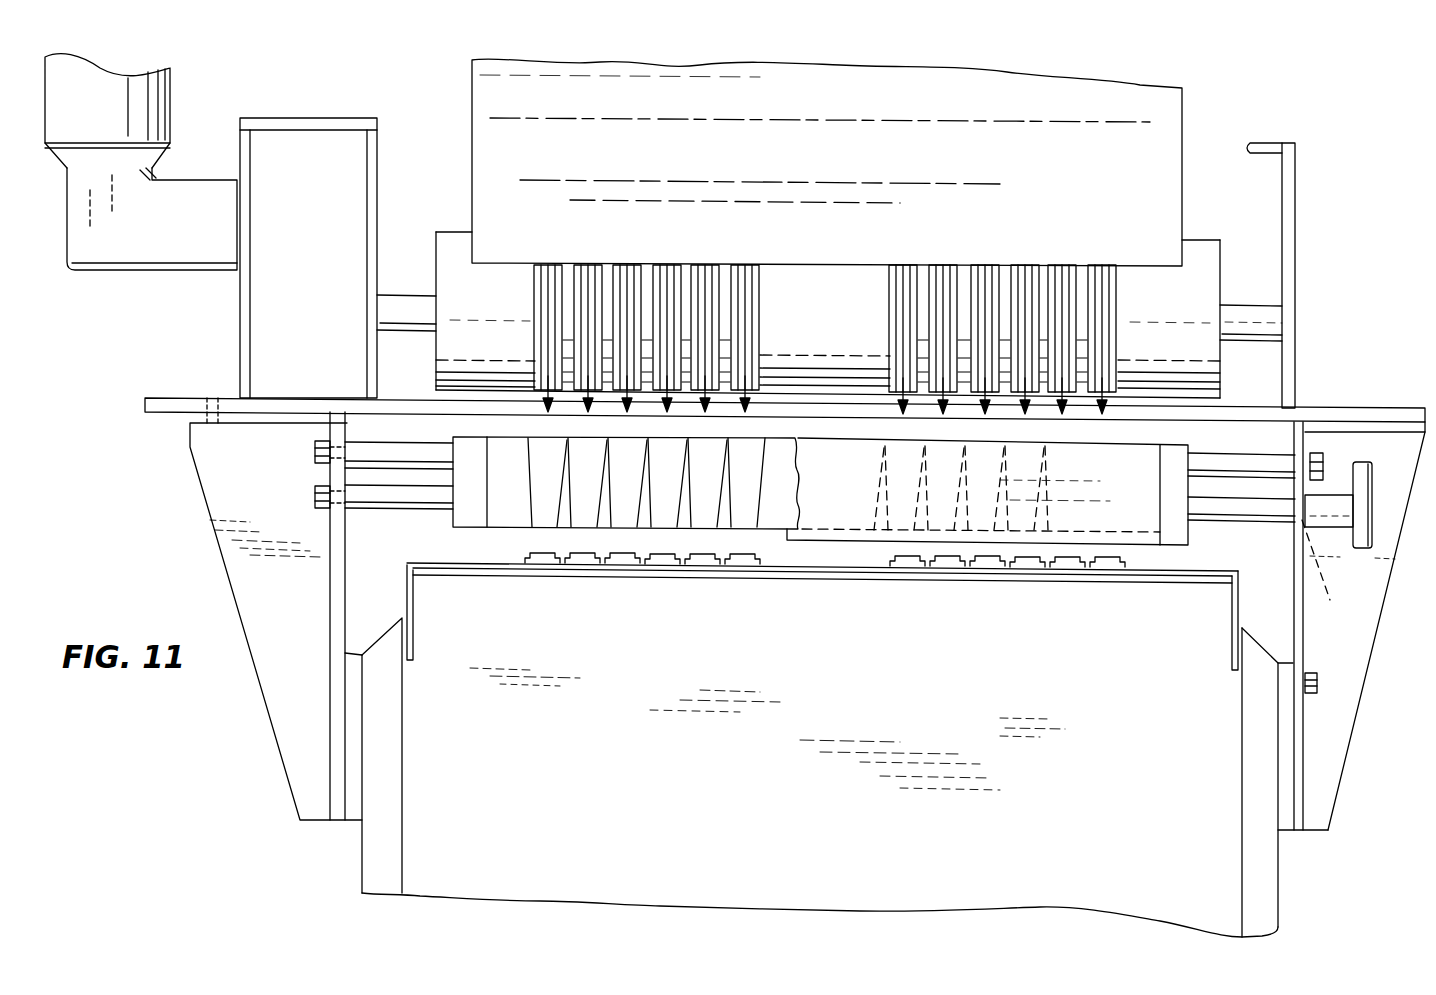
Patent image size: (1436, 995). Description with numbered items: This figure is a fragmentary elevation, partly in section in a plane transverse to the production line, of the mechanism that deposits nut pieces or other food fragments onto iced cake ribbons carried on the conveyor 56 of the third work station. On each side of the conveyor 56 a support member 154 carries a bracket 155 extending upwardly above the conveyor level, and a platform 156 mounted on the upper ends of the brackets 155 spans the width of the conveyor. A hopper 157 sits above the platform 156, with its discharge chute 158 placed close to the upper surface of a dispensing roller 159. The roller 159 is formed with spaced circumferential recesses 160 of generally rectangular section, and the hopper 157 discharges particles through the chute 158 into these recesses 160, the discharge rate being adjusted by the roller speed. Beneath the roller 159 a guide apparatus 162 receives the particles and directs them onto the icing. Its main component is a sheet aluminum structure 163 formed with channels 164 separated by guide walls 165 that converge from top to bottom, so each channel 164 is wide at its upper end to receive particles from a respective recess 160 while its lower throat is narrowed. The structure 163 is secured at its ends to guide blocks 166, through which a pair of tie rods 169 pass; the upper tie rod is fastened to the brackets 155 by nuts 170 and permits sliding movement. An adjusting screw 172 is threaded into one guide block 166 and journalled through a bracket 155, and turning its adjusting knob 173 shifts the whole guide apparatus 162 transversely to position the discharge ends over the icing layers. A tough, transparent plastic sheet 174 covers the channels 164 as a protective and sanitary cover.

The conveyor 56 is at (1195, 573).
The support member 154 is at (402, 768).
The bracket 155 is at (272, 730).
The platform 156 is at (1322, 407).
The hopper 157 is at (1182, 190).
The discharge chute 158 is at (1148, 268).
The dispensing roller 159 is at (1222, 270).
The circumferential recess 160 is at (1102, 272).
The guide apparatus 162 is at (1265, 452).
The sheet aluminum structure 163 is at (452, 464).
The channel 164 is at (665, 512).
The guide wall 165 is at (692, 472).
The guide block 166 is at (463, 512).
The tie rod 169 is at (1277, 478).
The nut 170 is at (313, 450).
The adjusting screw 172 is at (1329, 573).
The adjusting knob 173 is at (1360, 550).
The transparent plastic sheet 174 is at (815, 545).